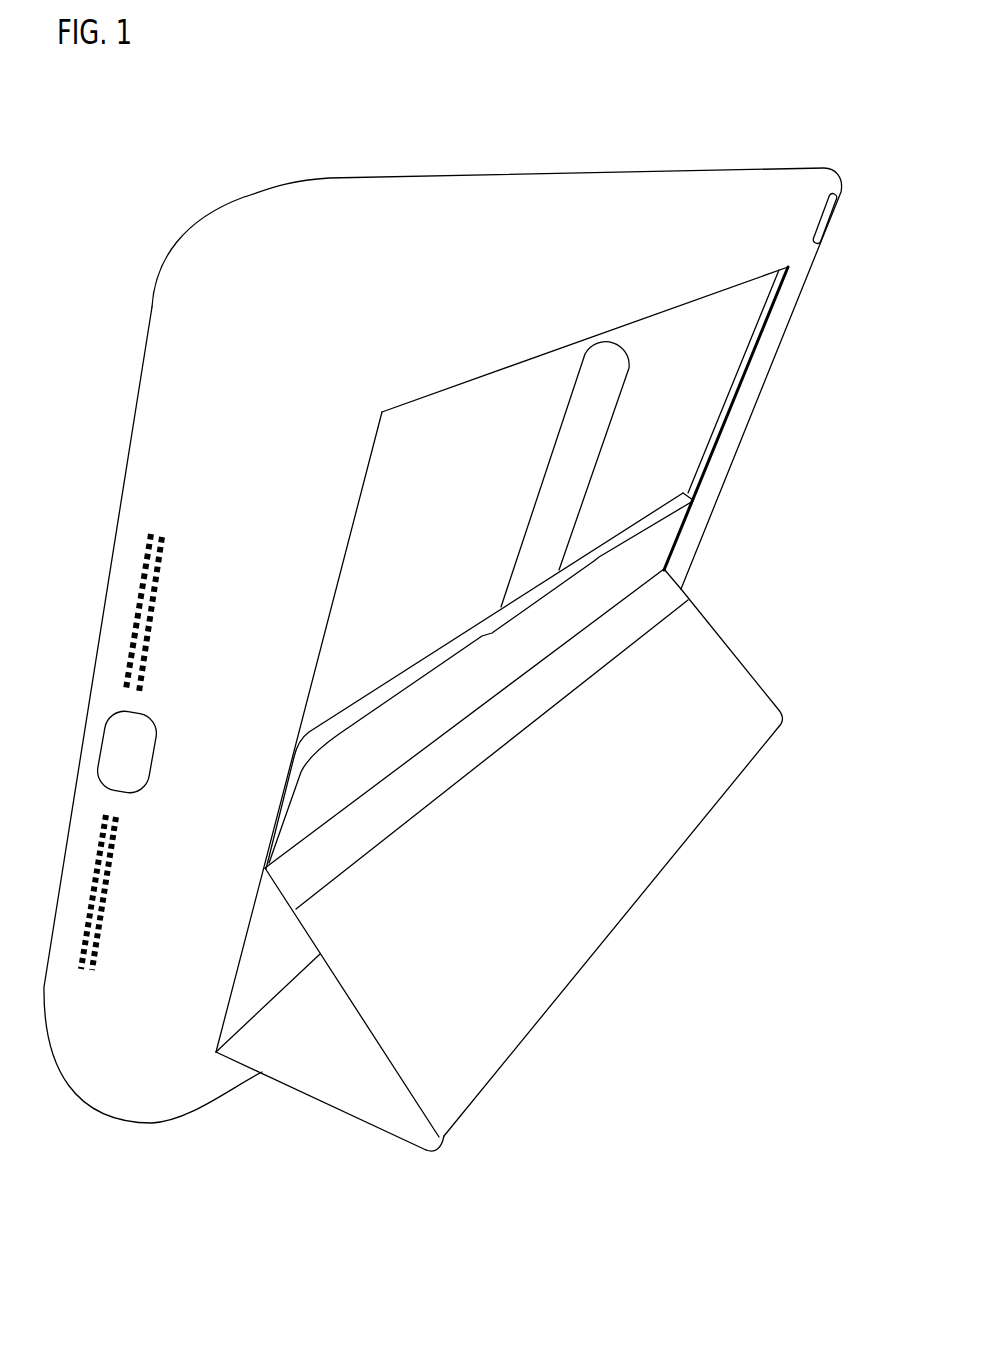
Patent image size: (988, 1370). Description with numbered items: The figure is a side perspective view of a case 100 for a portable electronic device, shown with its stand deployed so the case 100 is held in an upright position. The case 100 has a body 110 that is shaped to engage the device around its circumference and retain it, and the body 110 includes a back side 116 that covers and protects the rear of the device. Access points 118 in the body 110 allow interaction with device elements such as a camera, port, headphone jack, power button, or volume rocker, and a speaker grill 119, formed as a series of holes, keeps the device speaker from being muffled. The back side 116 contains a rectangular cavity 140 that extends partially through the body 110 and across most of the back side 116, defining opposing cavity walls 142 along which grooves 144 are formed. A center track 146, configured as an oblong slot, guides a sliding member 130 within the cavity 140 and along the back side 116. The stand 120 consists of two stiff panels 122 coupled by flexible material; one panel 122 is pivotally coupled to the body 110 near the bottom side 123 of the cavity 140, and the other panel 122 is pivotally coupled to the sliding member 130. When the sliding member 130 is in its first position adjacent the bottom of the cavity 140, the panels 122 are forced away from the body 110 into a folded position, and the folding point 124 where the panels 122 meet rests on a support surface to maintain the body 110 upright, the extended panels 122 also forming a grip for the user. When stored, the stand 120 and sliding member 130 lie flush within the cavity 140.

The case 100 is at (758, 62).
The body 110 is at (842, 172).
The back side 116 is at (418, 273).
The access points 118 is at (132, 752).
The speaker grill 119 is at (128, 578).
The stand 120 is at (779, 706).
The panels 122 is at (397, 1118).
The bottom side 123 is at (243, 1029).
The folding point 124 is at (438, 1156).
The sliding member 130 is at (652, 558).
The cavity 140 is at (700, 340).
The cavity walls 142 is at (780, 298).
The grooves 144 is at (724, 430).
The center track 146 is at (608, 370).